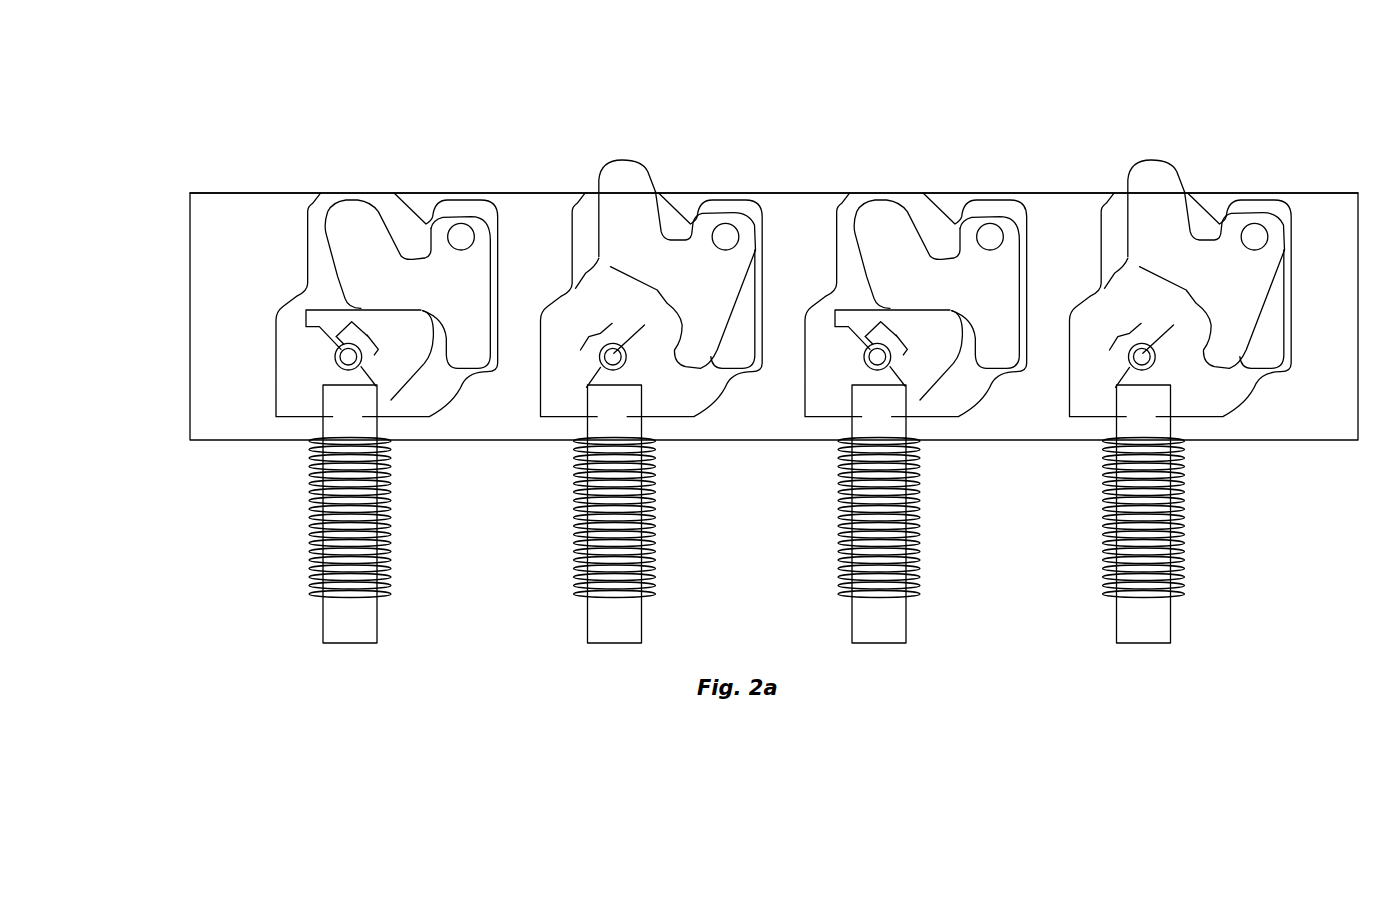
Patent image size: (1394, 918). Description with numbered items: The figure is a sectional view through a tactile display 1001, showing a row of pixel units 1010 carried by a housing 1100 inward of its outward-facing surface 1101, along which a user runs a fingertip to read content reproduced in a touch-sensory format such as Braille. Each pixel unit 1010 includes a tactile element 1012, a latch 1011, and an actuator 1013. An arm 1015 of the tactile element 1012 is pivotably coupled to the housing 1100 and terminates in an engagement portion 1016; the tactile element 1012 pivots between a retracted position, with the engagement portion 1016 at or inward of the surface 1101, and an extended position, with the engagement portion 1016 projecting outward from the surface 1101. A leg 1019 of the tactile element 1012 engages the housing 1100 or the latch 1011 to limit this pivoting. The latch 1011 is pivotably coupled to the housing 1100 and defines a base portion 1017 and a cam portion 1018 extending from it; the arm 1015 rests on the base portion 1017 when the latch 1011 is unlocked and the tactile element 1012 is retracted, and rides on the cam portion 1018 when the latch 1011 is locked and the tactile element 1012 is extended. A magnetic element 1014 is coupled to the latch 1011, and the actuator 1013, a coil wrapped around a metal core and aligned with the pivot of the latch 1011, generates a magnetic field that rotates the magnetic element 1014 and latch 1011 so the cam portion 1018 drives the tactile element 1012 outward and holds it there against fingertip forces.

The tactile display 1001 is at (1182, 115).
The pixel unit 1010 is at (923, 198).
The latch 1011 is at (326, 340).
The tactile element 1012 is at (953, 288).
The actuator 1013 is at (310, 538).
The magnetic element 1014 is at (343, 328).
The arm 1015 is at (1165, 284).
The engagement portion 1016 is at (648, 172).
The base portion 1017 is at (391, 346).
The cam portion 1018 is at (604, 278).
The leg 1019 is at (1007, 374).
The housing 1100 is at (546, 280).
The outward-facing surface 1101 is at (556, 193).